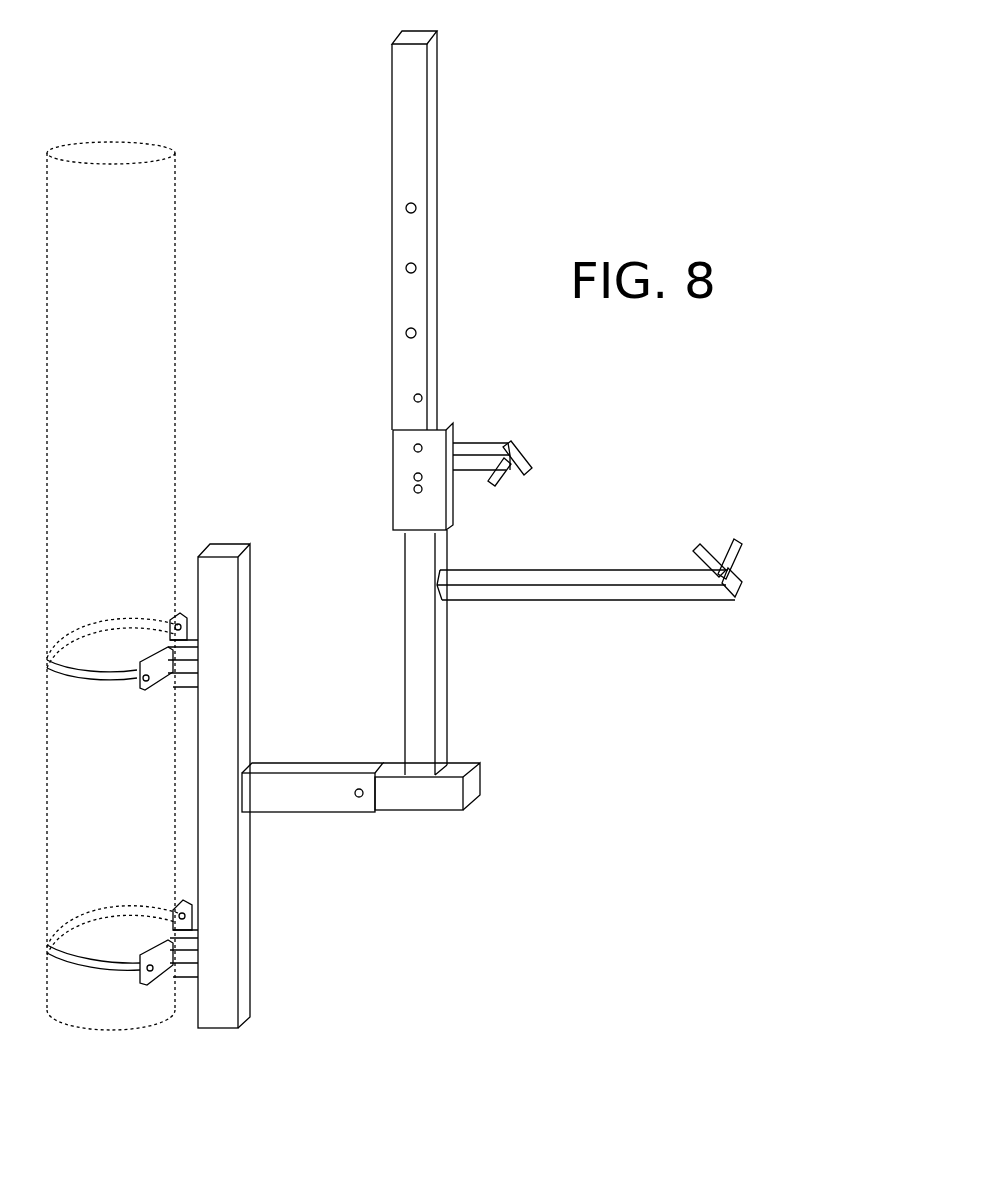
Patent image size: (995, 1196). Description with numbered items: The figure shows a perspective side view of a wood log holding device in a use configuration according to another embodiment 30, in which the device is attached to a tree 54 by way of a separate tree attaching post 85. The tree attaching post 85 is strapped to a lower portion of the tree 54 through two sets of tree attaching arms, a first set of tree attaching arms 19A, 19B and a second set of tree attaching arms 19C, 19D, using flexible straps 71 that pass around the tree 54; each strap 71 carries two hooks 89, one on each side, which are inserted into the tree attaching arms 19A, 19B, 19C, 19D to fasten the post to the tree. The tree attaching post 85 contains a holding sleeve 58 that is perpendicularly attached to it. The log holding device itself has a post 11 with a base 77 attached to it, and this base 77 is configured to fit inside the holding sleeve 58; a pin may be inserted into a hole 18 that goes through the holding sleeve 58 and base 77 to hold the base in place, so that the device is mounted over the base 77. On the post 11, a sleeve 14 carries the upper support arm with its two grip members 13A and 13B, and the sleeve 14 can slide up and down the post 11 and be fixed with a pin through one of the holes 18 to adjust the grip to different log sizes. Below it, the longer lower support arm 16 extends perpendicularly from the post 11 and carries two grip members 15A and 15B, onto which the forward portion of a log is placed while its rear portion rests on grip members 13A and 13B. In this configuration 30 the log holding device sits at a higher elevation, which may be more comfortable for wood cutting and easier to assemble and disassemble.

The embodiment 30 is at (310, 188).
The tree 54 is at (150, 325).
The post 11 is at (410, 168).
The hole 18 is at (423, 402).
The sleeve 14 is at (410, 497).
The grip member 13A is at (523, 465).
The grip member 13B is at (503, 487).
The lower support arm 16 is at (593, 592).
The grip member 15A is at (738, 552).
The grip member 15B is at (717, 573).
The tree attaching post 85 is at (215, 585).
The tree attaching arm 19A is at (157, 661).
The tree attaching arm 19B is at (187, 610).
The tree attaching arm 19C is at (163, 957).
The tree attaching arm 19D is at (187, 913).
The holding sleeve 58 is at (300, 793).
The base 77 is at (440, 797).
The flexible strap 71 is at (127, 972).
The hook 89 is at (143, 985).